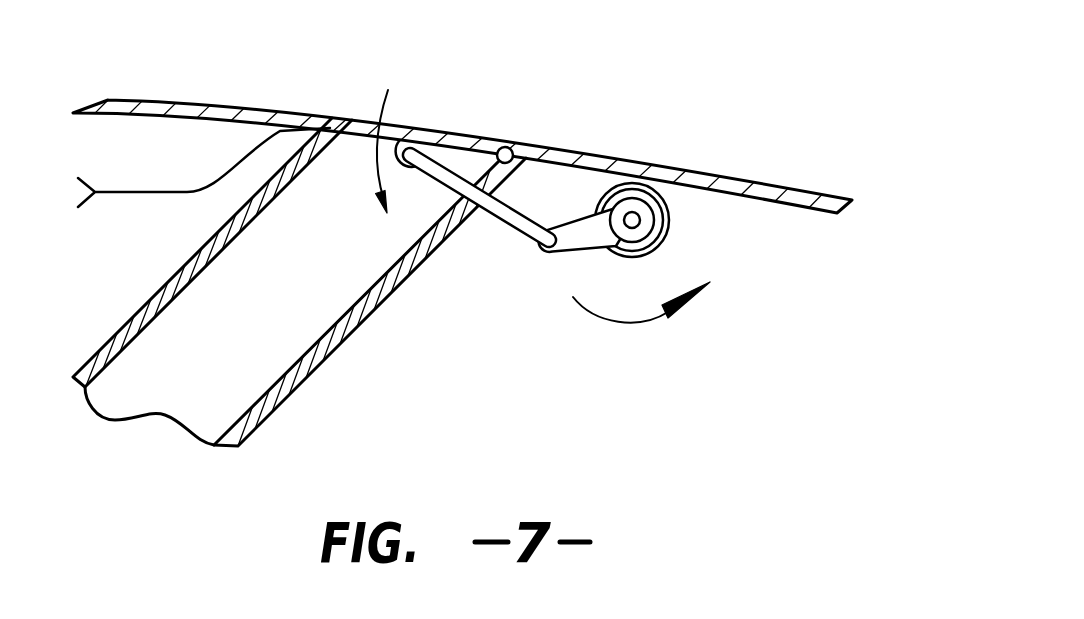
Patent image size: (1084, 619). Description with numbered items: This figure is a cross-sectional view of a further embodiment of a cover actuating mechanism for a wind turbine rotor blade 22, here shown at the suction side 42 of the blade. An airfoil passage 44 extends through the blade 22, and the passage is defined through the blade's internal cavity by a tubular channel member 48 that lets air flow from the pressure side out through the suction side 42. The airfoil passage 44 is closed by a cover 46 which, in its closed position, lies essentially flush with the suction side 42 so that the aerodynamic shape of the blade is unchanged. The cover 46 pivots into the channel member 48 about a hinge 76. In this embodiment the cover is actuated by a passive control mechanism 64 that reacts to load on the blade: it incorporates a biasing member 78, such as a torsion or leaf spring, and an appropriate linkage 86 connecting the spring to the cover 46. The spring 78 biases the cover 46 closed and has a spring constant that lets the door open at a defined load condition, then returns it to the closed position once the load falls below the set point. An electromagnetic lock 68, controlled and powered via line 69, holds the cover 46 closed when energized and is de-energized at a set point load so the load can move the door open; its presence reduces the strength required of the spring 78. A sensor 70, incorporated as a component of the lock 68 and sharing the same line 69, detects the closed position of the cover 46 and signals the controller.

The wind turbine rotor blade 22 is at (600, 87).
The suction side 42 is at (208, 102).
The airfoil passage 44 is at (177, 386).
The cover 46 is at (432, 130).
The channel member 48 is at (358, 330).
The passive control mechanism 64 is at (652, 157).
The electromagnetic lock 68 is at (333, 118).
The power/control line 69 is at (160, 193).
The sensor 70 is at (355, 140).
The hinge 76 is at (503, 147).
The biasing member 78 is at (672, 214).
The linkage 86 is at (518, 230).